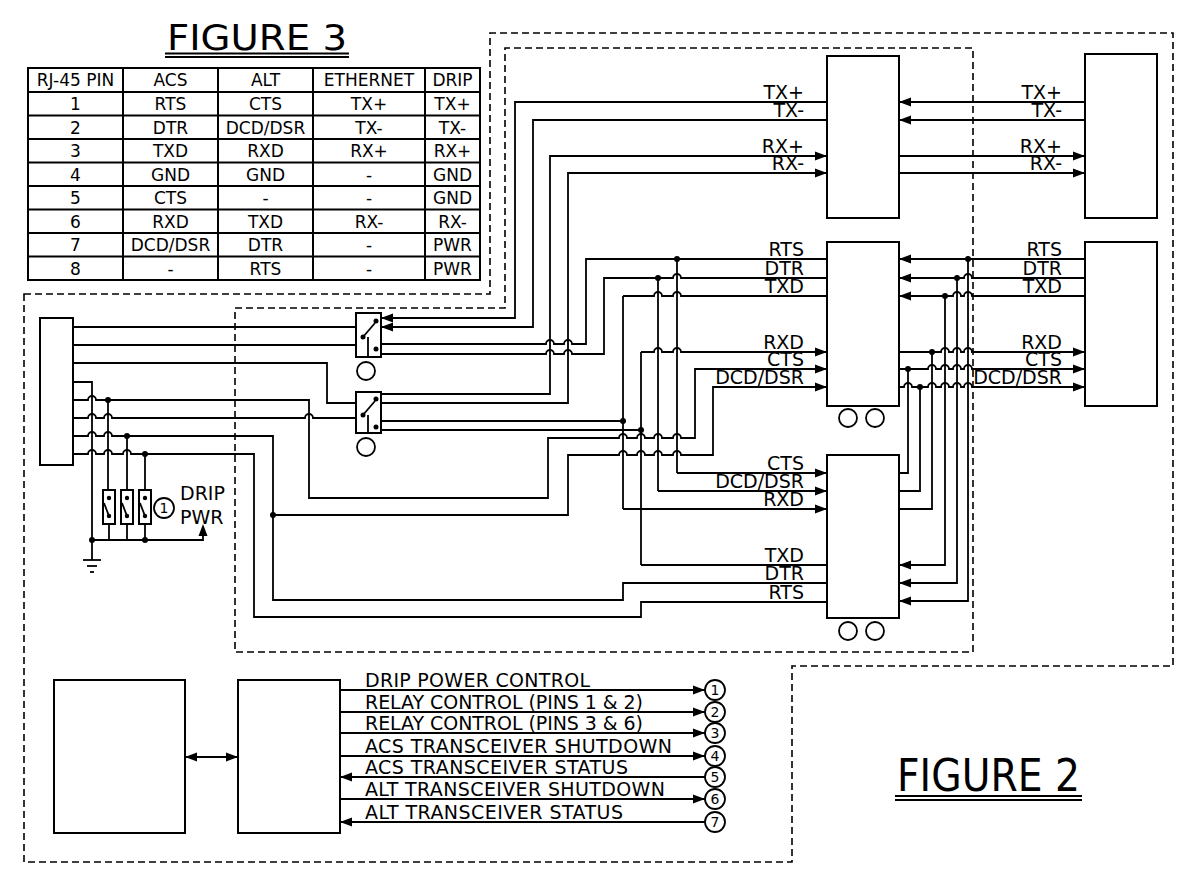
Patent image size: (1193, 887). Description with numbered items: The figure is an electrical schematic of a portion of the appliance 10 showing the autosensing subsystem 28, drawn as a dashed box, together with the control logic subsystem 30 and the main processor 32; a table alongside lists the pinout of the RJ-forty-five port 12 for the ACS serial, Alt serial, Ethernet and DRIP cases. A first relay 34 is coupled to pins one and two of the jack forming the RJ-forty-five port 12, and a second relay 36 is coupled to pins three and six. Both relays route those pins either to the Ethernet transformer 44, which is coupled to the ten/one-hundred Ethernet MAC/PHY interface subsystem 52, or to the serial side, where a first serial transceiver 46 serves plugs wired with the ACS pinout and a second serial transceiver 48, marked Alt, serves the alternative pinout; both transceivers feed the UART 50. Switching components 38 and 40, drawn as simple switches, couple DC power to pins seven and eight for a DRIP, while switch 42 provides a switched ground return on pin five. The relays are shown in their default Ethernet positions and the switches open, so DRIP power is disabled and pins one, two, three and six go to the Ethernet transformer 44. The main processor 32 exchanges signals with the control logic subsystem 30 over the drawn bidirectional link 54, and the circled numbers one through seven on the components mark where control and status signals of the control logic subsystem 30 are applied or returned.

The appliance 10 is at (1050, 35).
The RJ-45 port 12 is at (66, 466).
The autosensing subsystem 28 is at (690, 50).
The control logic subsystem 30 is at (277, 792).
The main processor 32 is at (108, 792).
The first relay 34 is at (381, 357).
The second relay 36 is at (381, 433).
The switching component 38 is at (151, 492).
The switching component 40 is at (128, 526).
The switch 42 is at (110, 526).
The Ethernet transformer 44 is at (899, 83).
The first RS-232 transceiver 46 is at (899, 243).
The second RS-232 transceiver 48 is at (899, 618).
The universal asynchronous receiver/transmitter (UART) 50 is at (1122, 407).
The 10/100 Ethernet/MAC/PHY interface subsystem 52 is at (1085, 197).
The processor bus 54 is at (211, 762).